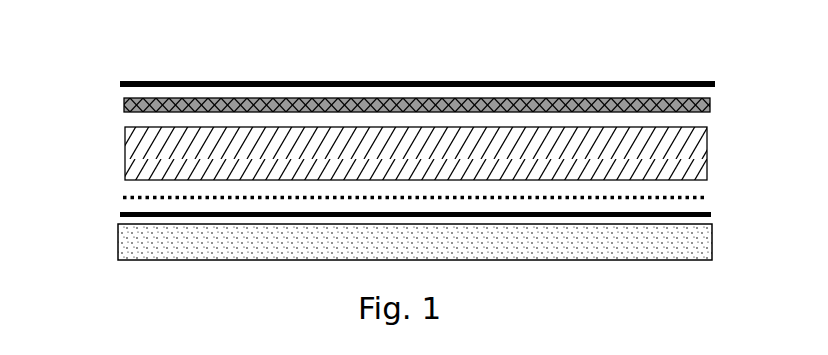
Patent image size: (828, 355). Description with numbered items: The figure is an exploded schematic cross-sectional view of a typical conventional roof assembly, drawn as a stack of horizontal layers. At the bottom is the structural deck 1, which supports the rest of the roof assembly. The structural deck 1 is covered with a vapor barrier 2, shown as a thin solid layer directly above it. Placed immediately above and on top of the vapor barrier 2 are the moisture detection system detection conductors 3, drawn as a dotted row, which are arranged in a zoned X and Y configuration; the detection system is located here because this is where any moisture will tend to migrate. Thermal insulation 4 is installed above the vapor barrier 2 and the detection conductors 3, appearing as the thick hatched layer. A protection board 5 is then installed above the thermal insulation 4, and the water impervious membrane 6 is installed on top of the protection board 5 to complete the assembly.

The structural deck 1 is at (113, 247).
The vapor barrier 2 is at (113, 210).
The detection conductors 3 is at (117, 195).
The thermal insulation 4 is at (124, 152).
The protection board 5 is at (122, 103).
The water impervious membrane 6 is at (203, 78).